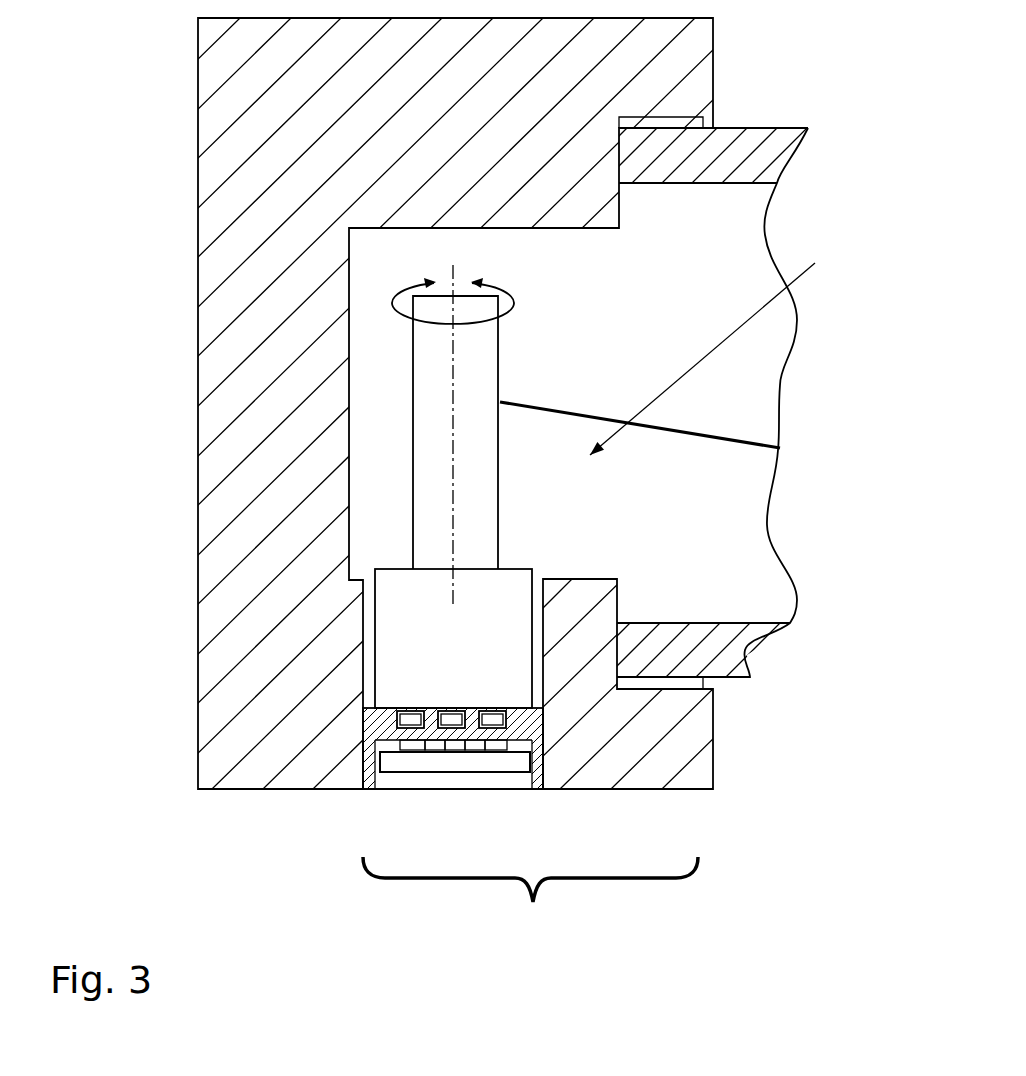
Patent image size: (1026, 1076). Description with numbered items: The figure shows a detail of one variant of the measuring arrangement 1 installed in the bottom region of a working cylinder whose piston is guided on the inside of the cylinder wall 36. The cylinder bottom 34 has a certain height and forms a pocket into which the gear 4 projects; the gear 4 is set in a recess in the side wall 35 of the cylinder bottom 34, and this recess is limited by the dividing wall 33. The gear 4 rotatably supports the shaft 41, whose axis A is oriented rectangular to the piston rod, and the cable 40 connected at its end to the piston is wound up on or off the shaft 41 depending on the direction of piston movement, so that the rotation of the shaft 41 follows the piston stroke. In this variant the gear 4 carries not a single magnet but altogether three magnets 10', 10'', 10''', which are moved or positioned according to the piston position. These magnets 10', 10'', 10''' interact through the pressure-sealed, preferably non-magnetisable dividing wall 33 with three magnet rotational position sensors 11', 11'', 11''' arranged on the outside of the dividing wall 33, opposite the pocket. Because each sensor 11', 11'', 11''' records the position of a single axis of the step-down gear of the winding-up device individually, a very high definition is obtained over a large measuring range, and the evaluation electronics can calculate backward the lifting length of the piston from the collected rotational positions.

The cylinder bottom 34 is at (233, 223).
The shaft 41 is at (427, 374).
The gear 4 is at (407, 590).
The measuring arrangement 1 is at (720, 349).
The cable 40 is at (710, 435).
The axis A is at (453, 497).
The cylinder wall 36 is at (737, 622).
The first magnet 10' is at (248, 694).
The second magnet 10'' is at (271, 631).
The third magnet 10''' is at (672, 699).
The first magnet rotational position sensor 11' is at (343, 809).
The second magnet rotational position sensor 11'' is at (439, 849).
The third magnet rotational position sensor 11''' is at (567, 839).
The dividing wall 33 is at (527, 752).
The side wall 35 is at (529, 834).